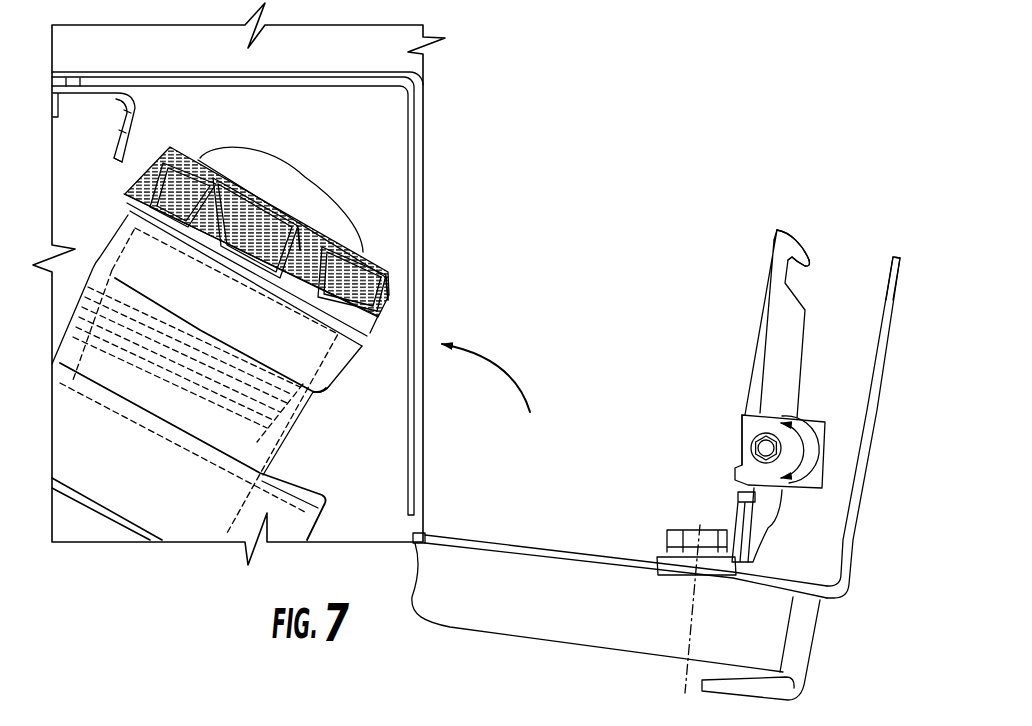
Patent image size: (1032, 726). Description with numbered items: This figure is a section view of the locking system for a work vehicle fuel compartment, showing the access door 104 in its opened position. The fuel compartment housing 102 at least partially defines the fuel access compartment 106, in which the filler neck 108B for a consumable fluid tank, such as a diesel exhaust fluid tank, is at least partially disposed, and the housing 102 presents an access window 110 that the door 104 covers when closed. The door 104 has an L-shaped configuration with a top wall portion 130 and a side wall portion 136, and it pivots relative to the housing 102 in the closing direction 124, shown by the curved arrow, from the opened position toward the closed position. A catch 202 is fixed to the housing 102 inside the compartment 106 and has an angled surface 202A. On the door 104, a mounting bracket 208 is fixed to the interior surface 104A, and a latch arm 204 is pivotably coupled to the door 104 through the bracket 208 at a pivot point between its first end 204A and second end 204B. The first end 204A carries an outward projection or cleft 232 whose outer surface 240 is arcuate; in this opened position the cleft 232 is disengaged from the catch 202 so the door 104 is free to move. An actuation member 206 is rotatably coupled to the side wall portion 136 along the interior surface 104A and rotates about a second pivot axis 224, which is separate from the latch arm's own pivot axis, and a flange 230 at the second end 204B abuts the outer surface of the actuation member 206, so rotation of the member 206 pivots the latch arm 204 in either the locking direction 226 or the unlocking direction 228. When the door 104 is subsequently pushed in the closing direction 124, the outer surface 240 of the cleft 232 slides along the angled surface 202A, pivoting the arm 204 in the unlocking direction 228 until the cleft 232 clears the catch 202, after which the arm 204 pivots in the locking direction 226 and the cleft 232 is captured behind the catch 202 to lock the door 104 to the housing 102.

The fuel compartment housing 102 is at (80, 72).
The access window 110 is at (93, 72).
The catch 202 is at (96, 101).
The angled surface 202A is at (118, 162).
The fuel access compartment 106 is at (351, 454).
The filler neck 108B is at (325, 372).
The closing direction 124 is at (518, 390).
The access door 104 is at (870, 404).
The interior surface 104A is at (888, 266).
The top wall portion 130 is at (851, 588).
The side wall portion 136 is at (555, 558).
The second pivot axis 224 is at (684, 666).
The actuation member 206 is at (666, 538).
The flange 230 is at (741, 498).
The latch arm 204 is at (772, 330).
The first end 204A is at (776, 236).
The second end 204B is at (740, 560).
The cleft 232 is at (776, 229).
The outer surface 240 is at (805, 240).
The unlocking direction 228 is at (798, 414).
The locking direction 226 is at (741, 433).
The mounting bracket 208 is at (815, 476).